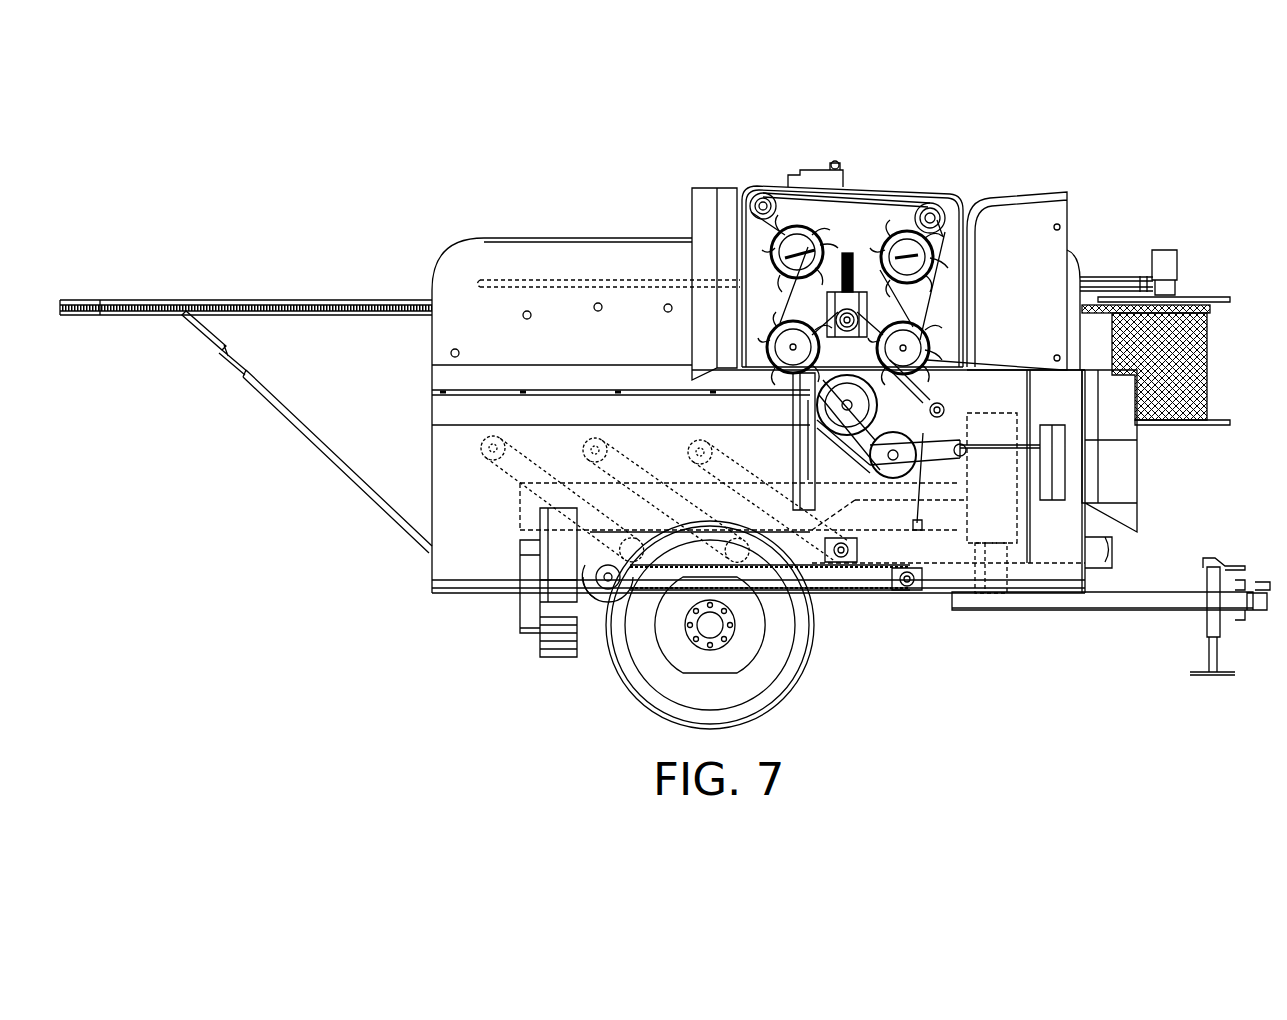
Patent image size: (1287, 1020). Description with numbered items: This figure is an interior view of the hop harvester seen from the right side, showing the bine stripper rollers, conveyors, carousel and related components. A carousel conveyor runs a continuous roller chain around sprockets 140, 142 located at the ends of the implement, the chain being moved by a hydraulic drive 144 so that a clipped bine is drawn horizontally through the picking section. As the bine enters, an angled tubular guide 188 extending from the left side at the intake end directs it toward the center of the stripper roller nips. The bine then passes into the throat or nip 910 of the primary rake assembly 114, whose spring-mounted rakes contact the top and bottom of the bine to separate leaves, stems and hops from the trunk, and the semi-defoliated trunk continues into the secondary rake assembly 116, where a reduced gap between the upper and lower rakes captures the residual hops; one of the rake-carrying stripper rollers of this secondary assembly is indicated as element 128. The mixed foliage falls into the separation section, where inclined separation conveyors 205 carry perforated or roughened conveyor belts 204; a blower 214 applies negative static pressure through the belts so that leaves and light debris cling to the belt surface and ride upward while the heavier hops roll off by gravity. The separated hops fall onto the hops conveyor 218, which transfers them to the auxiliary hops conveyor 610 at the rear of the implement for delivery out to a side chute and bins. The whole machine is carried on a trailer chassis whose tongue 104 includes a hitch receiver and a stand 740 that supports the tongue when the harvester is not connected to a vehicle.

The tongue 104 is at (1112, 610).
The primary rake assembly 114 is at (850, 175).
The secondary rake assembly 116 is at (871, 250).
The brush 128 is at (957, 175).
The sprocket 140 is at (90, 300).
The front sprocket 142 is at (1192, 305).
The hydraulic drive 144 is at (1165, 250).
The angled tubular guide 188 is at (592, 280).
The separation conveyor belt 204 is at (722, 460).
The separation conveyors 205 is at (718, 492).
The blower 214 is at (1000, 593).
The hops conveyor 218 is at (868, 540).
The auxiliary hops conveyor 610 is at (503, 624).
The stand 740 is at (1220, 630).
The throat or nip 910 is at (760, 293).